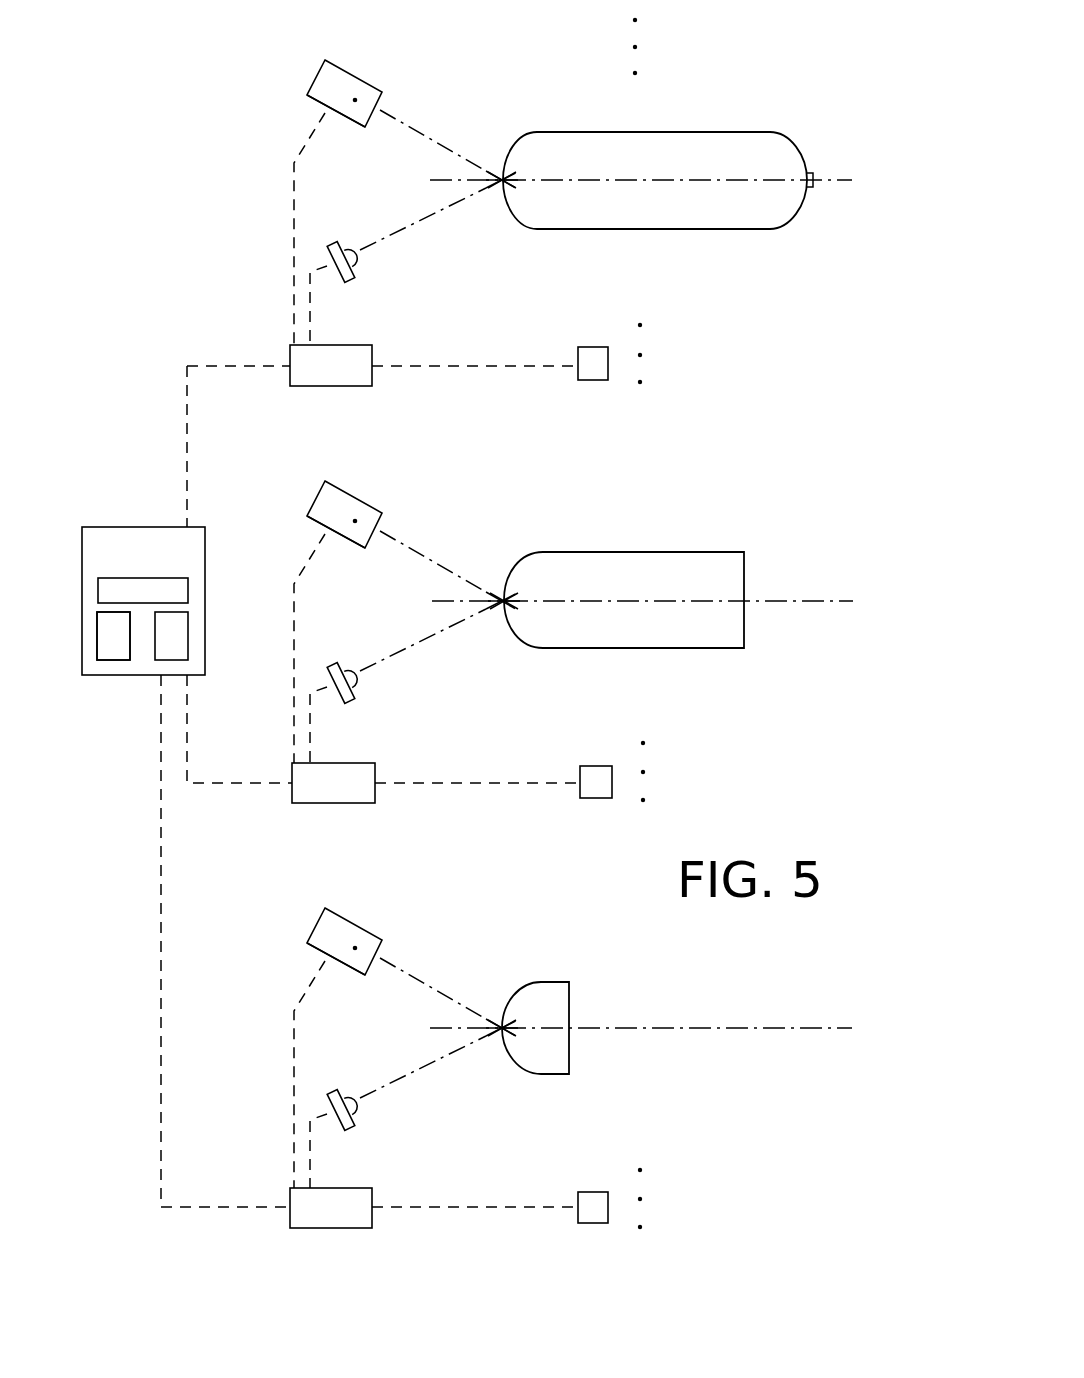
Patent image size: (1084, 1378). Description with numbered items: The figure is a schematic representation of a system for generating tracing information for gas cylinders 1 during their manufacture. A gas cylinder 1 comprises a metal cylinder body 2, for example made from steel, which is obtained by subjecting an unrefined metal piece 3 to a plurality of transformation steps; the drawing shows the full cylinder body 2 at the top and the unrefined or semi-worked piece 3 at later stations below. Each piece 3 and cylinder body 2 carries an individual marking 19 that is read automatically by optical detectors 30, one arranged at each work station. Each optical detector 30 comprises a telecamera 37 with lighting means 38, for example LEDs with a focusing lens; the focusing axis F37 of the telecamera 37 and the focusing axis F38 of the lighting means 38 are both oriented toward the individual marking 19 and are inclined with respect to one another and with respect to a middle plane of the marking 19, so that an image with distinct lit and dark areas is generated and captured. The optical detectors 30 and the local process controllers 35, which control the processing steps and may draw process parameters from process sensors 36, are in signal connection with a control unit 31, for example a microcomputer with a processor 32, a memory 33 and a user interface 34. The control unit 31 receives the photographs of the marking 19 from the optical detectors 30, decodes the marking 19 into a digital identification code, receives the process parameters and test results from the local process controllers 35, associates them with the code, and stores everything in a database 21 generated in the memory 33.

The gas cylinder 1 is at (690, 131).
The metal cylinder body 2 is at (688, 230).
The unrefined metal piece 3 is at (510, 616).
The individual marking 19 is at (494, 156).
The database 21 is at (106, 652).
The optical detector 30 is at (347, 72).
The control unit 31 is at (90, 527).
The processor 32 is at (98, 592).
The memory 33 is at (97, 640).
The user interface 34 is at (170, 652).
The local process controller 35 is at (358, 345).
The process sensor 36 is at (592, 347).
The telecamera 37 is at (347, 118).
The lighting means 38 is at (360, 258).
The focusing axis of the telecamera F37 is at (390, 115).
The focusing axis of the lighting means F38 is at (440, 208).